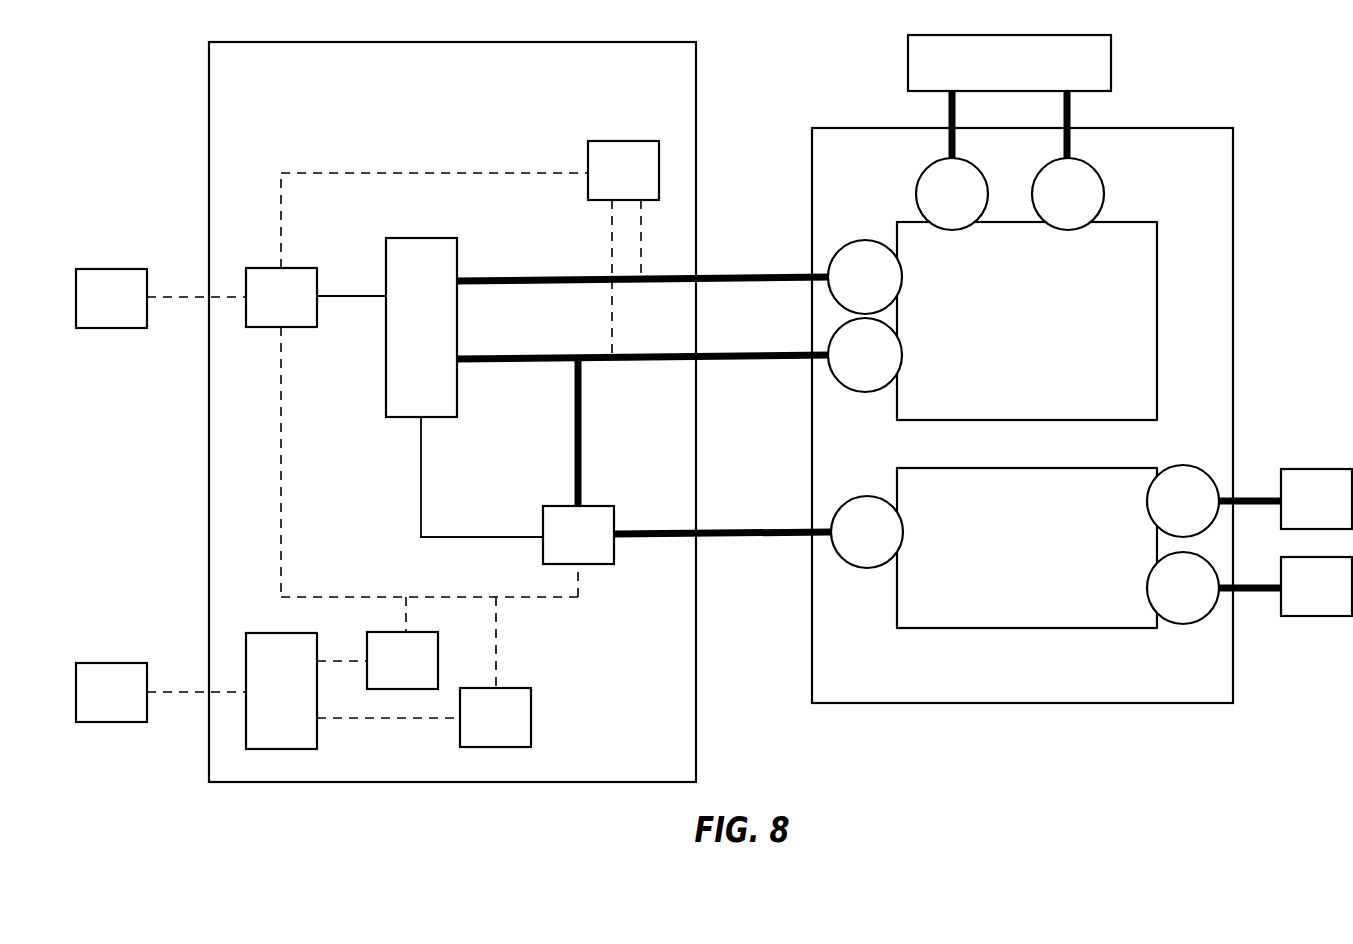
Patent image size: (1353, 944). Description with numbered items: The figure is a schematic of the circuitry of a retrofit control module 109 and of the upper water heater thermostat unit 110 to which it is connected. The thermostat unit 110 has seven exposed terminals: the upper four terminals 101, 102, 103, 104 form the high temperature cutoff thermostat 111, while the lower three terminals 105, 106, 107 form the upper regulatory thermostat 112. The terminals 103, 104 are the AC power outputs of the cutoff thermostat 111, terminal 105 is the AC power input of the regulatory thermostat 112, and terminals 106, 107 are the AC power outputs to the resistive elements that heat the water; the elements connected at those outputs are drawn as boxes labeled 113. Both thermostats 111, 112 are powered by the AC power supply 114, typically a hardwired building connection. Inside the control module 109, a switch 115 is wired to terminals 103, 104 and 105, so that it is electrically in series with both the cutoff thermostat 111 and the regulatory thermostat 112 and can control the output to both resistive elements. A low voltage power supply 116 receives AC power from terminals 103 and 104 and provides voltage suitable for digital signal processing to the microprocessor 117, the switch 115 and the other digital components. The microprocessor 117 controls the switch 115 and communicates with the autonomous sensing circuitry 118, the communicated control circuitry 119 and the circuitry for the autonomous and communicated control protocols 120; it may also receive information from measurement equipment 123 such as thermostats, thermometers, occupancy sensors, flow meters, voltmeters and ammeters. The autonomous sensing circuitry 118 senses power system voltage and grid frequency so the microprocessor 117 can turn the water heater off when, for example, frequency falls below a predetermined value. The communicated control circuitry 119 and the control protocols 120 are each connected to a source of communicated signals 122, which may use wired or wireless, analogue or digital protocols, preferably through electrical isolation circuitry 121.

The terminal 101 is at (936, 211).
The terminal 102 is at (1052, 211).
The terminal 103 is at (849, 372).
The terminal 104 is at (849, 294).
The terminal 105 is at (851, 549).
The terminal 106 is at (1167, 518).
The terminal 107 is at (1167, 605).
The control module 109 is at (644, 765).
The upper water heater thermostat unit 110 is at (1014, 690).
The high temperature cutoff thermostat 111 is at (1015, 405).
The upper regulatory thermostat 112 is at (1015, 615).
The antenna 113 is at (1300, 516).
The AC power supply 114 is at (992, 78).
The switch 115 is at (562, 549).
The low voltage power supply 116 is at (407, 346).
The microprocessor 117 is at (265, 314).
The autonomous sensing circuitry 118 is at (608, 188).
The communicated control circuitry 119 is at (480, 734).
The autonomous and communicated control protocols 120 is at (386, 676).
The electrical isolation circuitry 121 is at (265, 707).
The source of communicated signals 122 is at (95, 709).
The measurement equipment 123 is at (95, 315).